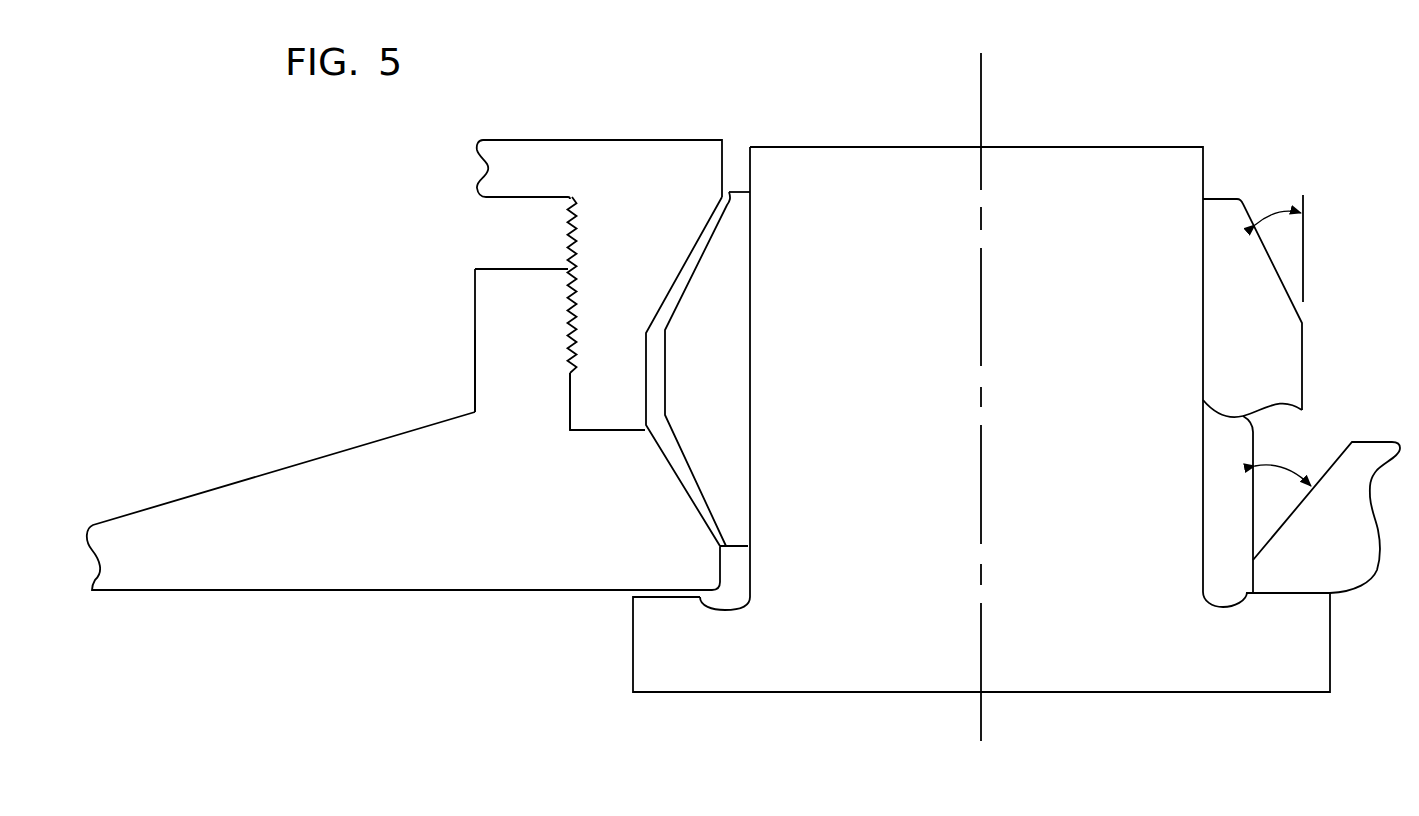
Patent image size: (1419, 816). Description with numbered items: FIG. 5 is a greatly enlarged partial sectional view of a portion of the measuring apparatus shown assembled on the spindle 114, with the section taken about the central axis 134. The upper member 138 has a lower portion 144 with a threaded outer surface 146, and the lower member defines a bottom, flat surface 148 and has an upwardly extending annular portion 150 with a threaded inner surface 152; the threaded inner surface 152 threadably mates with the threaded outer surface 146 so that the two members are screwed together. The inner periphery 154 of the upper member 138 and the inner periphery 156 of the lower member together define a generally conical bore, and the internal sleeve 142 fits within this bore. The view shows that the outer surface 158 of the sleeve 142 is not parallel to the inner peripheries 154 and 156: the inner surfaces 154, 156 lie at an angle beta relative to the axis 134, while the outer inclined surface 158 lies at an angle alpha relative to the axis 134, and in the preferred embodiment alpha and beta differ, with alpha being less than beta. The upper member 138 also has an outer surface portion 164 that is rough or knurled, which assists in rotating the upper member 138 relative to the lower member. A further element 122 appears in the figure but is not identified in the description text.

The spindle 114 is at (1117, 143).
The base plate 122 is at (632, 645).
The axis 134 is at (983, 117).
The upper member 138 is at (569, 294).
The internal sleeve 142 is at (729, 248).
The lower portion 144 is at (597, 388).
The threaded outer surface 146 is at (570, 227).
The bottom flat surface 148 is at (262, 592).
The upwardly extending annular portion 150 is at (503, 303).
The threaded inner surface 152 is at (568, 348).
The inner periphery 154 is at (682, 270).
The inner periphery 156 is at (1338, 450).
The outer surface 158 is at (1238, 202).
The outer surface portion 164 is at (480, 162).